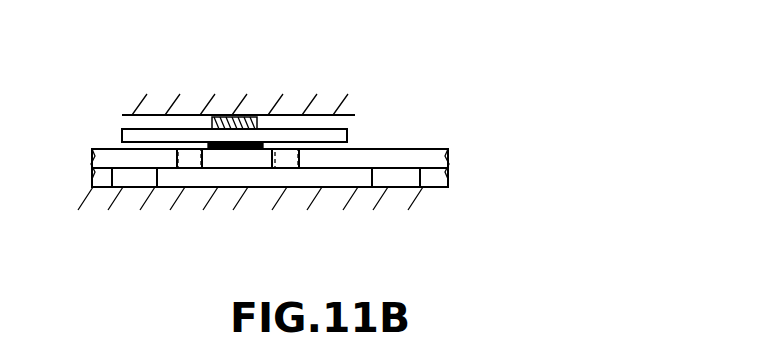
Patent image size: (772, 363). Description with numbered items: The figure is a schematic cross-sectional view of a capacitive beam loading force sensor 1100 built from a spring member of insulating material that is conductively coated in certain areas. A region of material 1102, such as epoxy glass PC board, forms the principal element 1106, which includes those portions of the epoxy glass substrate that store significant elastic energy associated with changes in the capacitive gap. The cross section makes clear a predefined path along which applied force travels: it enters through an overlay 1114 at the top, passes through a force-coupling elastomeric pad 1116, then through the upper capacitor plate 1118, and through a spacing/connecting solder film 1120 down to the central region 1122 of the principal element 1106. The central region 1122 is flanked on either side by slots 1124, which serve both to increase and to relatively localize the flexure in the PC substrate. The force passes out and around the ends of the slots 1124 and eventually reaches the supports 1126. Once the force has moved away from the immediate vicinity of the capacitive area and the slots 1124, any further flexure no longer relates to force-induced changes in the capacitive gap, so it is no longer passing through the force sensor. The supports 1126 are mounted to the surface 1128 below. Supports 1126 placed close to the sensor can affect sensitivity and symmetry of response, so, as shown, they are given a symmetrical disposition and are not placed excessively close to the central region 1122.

The sensor 1100 is at (375, 67).
The region of material 1102 is at (407, 158).
The principal element 1106 is at (82, 157).
The overlay 1114 is at (262, 100).
The force-coupling elastomeric pad 1116 is at (226, 122).
The upper capacitor plate 1118 is at (160, 133).
The spacing/connecting solder film 1120 is at (217, 165).
The central region 1122 is at (254, 158).
The slots 1124 is at (187, 160).
The supports 1126 is at (127, 176).
The surface 1128 is at (400, 198).